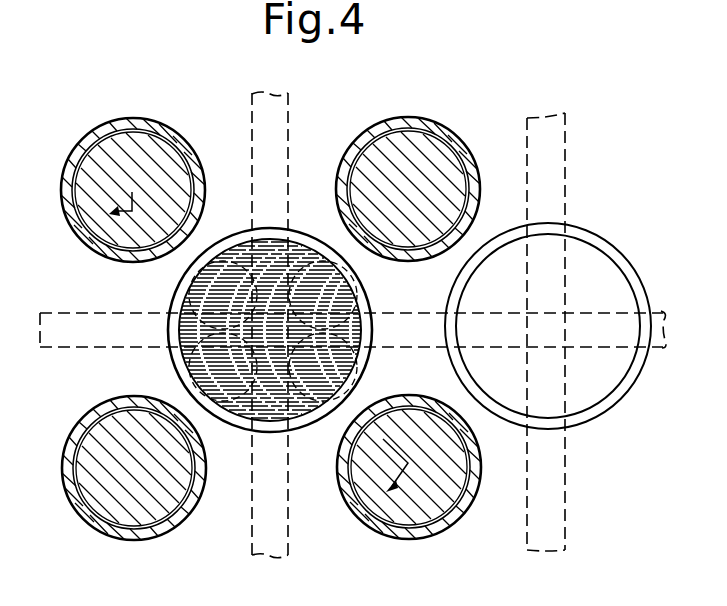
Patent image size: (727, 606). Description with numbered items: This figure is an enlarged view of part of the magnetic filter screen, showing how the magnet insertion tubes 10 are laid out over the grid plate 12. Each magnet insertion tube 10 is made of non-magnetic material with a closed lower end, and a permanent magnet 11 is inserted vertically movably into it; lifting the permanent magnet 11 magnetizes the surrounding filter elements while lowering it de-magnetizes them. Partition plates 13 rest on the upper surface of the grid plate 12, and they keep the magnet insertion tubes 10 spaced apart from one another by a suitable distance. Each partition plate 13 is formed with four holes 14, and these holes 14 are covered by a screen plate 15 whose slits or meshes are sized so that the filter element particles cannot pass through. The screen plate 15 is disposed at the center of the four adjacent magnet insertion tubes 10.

The magnet insertion tube 10 is at (182, 142).
The permanent magnet 11 is at (93, 160).
The grid plate 12 is at (279, 125).
The partition plate 13 is at (92, 378).
The hole 14 is at (352, 290).
The screen plate 15 is at (304, 247).